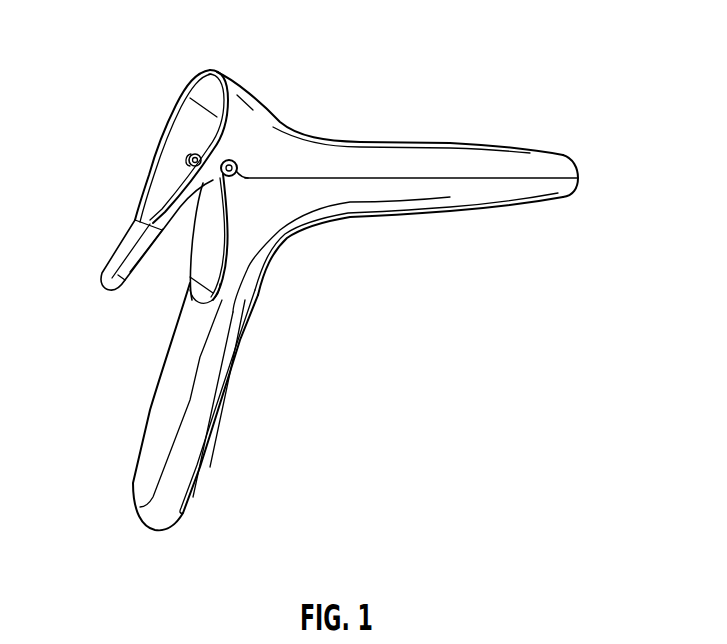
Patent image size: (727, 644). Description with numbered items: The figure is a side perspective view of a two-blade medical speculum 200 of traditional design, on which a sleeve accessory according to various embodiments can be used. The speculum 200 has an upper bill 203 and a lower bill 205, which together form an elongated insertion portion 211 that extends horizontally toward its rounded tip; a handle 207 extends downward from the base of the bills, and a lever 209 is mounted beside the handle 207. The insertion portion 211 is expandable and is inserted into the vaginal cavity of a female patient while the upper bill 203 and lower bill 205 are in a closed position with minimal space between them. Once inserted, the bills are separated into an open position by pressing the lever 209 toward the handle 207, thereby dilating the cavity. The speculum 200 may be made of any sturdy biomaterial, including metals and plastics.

The speculum 200 is at (141, 31).
The insertion portion 211 is at (373, 105).
The upper bill 203 is at (540, 157).
The lower bill 205 is at (543, 200).
The handle 207 is at (150, 457).
The lever 209 is at (128, 243).